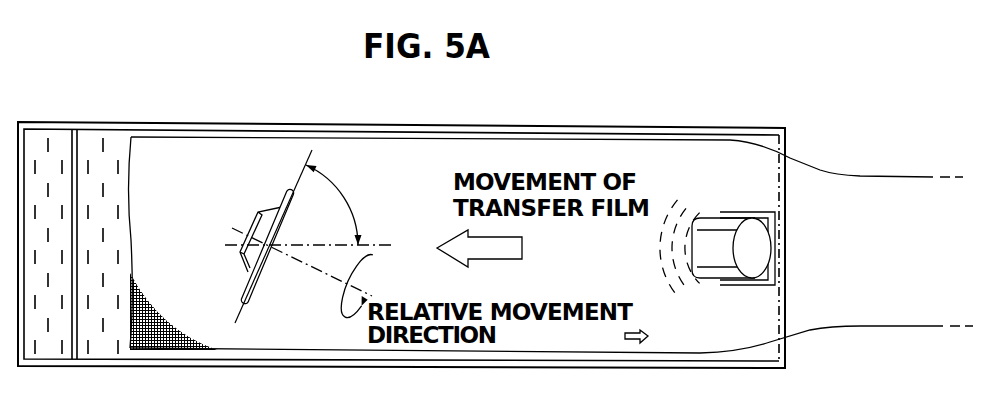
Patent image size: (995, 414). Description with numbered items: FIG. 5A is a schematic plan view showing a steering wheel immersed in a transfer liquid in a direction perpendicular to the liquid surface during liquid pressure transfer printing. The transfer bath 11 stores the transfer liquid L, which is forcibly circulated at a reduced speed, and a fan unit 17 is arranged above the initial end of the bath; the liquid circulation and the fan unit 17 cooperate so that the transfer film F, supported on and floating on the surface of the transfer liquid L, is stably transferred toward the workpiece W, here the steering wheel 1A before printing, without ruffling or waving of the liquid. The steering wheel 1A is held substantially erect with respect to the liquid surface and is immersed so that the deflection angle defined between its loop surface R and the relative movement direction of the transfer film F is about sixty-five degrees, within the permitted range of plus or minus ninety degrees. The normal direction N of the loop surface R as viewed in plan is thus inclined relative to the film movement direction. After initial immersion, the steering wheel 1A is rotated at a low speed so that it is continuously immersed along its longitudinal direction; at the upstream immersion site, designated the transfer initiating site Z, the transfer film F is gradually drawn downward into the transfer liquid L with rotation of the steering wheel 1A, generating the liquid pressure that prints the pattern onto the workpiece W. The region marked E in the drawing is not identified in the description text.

The transfer bath 11 is at (690, 128).
The fan unit 17 is at (713, 227).
The steering wheel 1A is at (292, 208).
The workpiece W is at (328, 233).
The transfer initiating site Z is at (277, 190).
The normal direction N is at (330, 273).
The loop surface R is at (238, 311).
The transfer film F is at (191, 208).
The transfer liquid L is at (118, 261).
The transfer film leading portion E is at (888, 263).